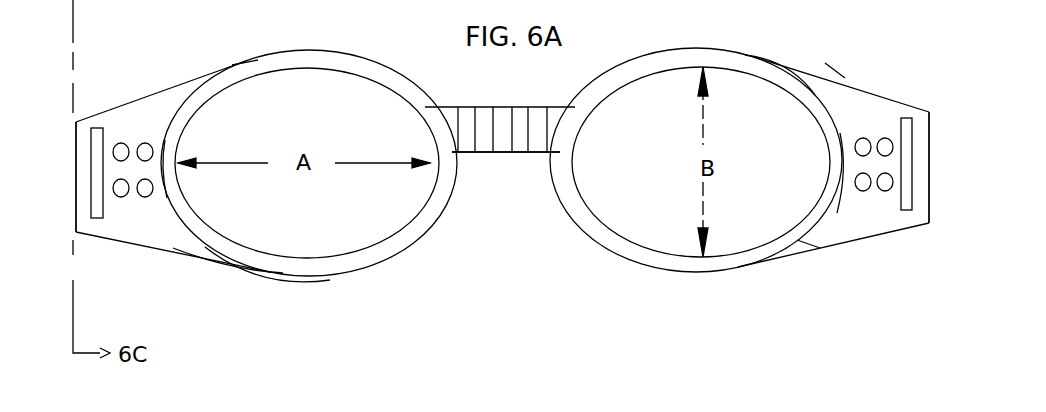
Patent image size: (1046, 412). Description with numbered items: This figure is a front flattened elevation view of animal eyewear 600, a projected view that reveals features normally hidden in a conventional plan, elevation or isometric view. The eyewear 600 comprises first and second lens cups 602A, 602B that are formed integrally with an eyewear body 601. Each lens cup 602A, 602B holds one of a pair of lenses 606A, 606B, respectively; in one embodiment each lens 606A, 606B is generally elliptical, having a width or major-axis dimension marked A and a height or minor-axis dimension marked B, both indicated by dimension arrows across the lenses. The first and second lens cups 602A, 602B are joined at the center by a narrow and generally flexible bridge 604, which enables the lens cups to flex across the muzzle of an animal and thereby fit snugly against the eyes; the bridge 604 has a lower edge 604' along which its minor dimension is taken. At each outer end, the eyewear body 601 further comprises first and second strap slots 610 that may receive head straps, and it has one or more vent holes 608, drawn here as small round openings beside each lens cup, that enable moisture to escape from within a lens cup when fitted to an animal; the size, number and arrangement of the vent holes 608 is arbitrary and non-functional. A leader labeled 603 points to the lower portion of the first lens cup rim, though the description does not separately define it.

The eyewear 600 is at (235, 28).
The eyewear body 601 is at (126, 110).
The first lens cup 602A is at (335, 55).
The second lens cup 602B is at (605, 240).
The lower rim edge 603 is at (287, 263).
The bridge 604 is at (500, 113).
The lower edge 604' is at (506, 174).
The first lens 606A is at (335, 212).
The second lens 606B is at (650, 172).
The vent holes 608 is at (145, 196).
The strap slots 610 is at (93, 198).